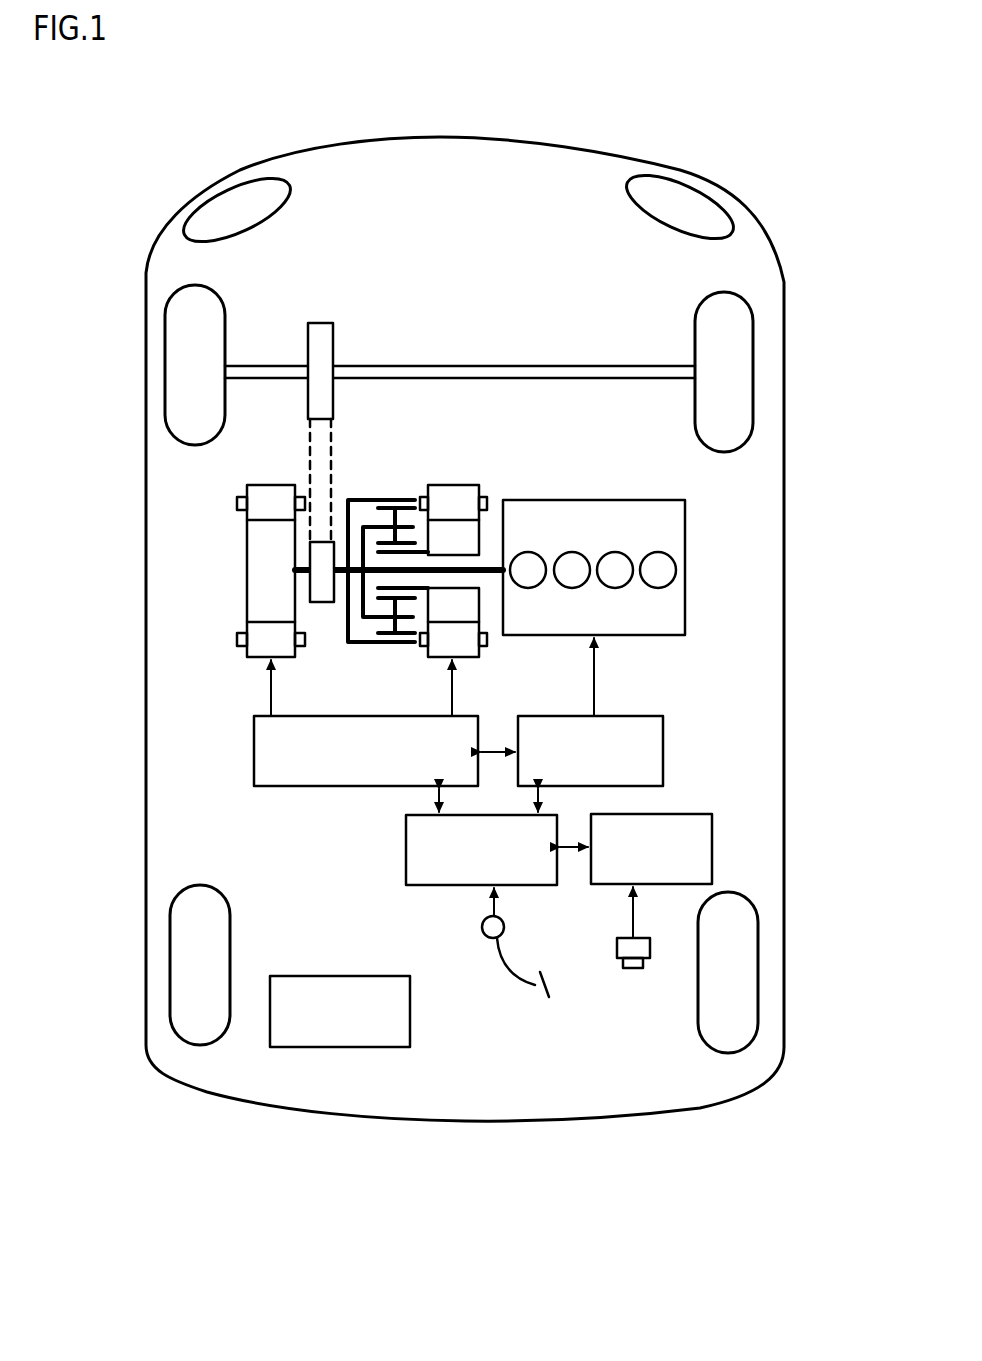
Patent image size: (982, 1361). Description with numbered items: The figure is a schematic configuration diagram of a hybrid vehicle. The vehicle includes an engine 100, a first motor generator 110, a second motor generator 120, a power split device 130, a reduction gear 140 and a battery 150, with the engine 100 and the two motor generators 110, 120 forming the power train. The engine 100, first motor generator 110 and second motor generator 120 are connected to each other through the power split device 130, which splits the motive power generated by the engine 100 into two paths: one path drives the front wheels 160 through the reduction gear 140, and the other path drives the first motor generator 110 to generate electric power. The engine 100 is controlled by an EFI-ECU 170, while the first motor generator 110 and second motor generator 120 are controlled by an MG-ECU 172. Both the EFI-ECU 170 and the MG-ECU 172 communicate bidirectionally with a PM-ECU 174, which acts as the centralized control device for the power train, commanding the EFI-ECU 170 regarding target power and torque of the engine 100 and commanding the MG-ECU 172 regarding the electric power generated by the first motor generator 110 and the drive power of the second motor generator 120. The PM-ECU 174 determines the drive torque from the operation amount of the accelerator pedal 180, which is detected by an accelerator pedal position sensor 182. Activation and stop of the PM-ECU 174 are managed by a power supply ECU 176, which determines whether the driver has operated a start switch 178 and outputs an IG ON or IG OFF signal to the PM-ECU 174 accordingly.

The engine 100 is at (540, 500).
The first motor generator 110 is at (457, 485).
The second motor generator 120 is at (247, 570).
The power split device 130 is at (383, 500).
The reduction gear 140 is at (323, 305).
The battery 150 is at (270, 1020).
The front wheels 160 is at (165, 376).
The EFI-ECU 170 is at (633, 716).
The MG-ECU 172 is at (254, 757).
The PM-ECU 174 is at (406, 850).
The power supply ECU 176 is at (652, 813).
The start switch 178 is at (628, 970).
The accelerator pedal 180 is at (535, 985).
The accelerator pedal position sensor 182 is at (482, 943).